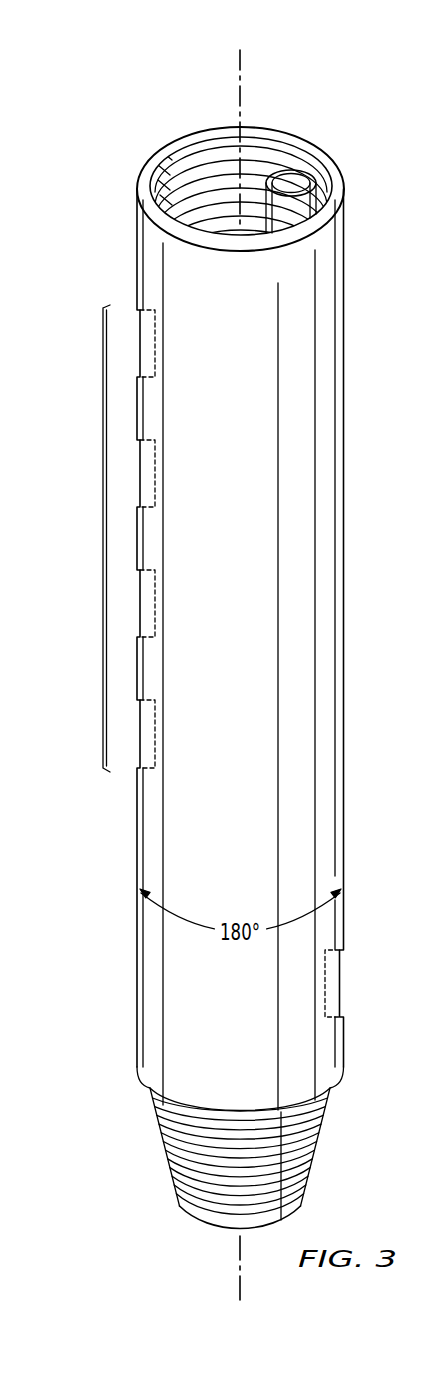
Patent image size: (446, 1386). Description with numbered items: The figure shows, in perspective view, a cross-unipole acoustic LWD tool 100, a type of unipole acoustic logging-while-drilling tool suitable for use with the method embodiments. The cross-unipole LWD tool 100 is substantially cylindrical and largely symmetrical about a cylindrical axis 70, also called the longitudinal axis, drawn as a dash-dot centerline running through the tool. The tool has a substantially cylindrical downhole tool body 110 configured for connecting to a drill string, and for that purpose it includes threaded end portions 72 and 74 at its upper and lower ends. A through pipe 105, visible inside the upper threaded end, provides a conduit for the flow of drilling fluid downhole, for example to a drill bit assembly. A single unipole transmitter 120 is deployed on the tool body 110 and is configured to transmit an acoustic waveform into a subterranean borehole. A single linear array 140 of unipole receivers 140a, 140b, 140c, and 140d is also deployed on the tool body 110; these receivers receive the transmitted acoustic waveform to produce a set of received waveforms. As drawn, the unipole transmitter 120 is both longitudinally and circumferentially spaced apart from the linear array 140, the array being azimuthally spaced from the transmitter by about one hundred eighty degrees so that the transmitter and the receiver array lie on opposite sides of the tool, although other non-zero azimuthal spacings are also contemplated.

The cross-unipole acoustic LWD tool 100 is at (77, 191).
The cylindrical axis 70 is at (238, 63).
The threaded end portion 72 is at (190, 148).
The through pipe 105 is at (300, 172).
The downhole tool body 110 is at (137, 986).
The linear array 140 is at (107, 534).
The unipole receiver 140a is at (157, 340).
The unipole receiver 140b is at (157, 470).
The unipole receiver 140c is at (157, 600).
The unipole receiver 140d is at (157, 730).
The unipole transmitter 120 is at (325, 997).
The threaded end portion 74 is at (170, 1157).